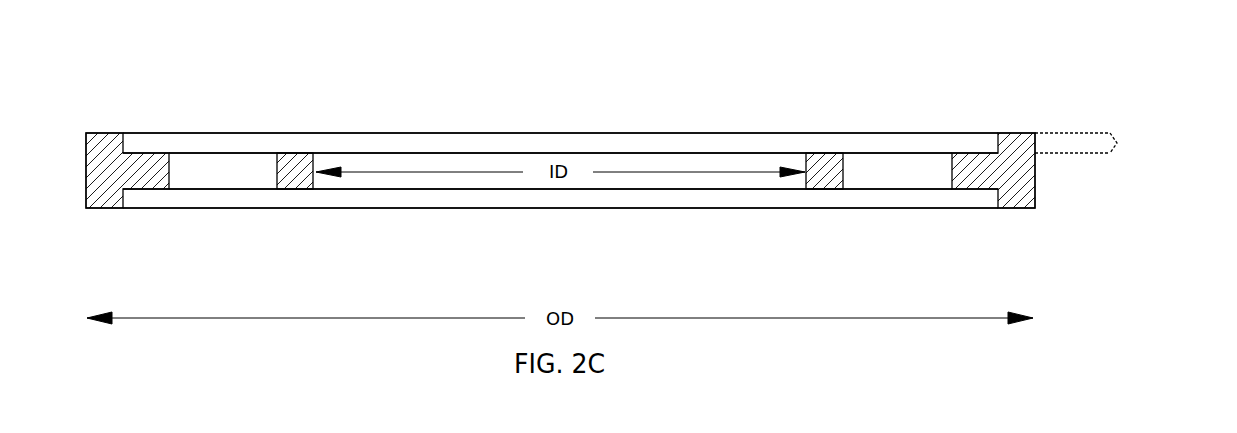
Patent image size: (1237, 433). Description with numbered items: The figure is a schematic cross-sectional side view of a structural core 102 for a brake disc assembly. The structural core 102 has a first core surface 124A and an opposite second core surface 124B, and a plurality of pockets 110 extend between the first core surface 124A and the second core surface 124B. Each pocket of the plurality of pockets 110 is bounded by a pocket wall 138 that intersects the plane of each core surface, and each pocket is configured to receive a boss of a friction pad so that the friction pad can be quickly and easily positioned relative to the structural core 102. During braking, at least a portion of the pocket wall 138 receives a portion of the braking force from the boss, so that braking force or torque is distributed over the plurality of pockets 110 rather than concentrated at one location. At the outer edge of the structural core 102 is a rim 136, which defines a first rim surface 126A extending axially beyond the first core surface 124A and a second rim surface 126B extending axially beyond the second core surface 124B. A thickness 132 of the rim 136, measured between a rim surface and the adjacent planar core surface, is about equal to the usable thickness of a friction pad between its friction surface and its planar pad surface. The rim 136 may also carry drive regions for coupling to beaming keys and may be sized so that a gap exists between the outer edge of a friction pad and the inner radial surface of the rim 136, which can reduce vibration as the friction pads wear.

The structural core 102 is at (604, 75).
The plurality of pockets 110 is at (925, 173).
The first core surface 124A is at (970, 146).
The second core surface 124B is at (966, 190).
The first rim surface 126A is at (960, 150).
The second rim surface 126B is at (918, 208).
The thickness of rim 132 is at (1117, 143).
The rim 136 is at (1013, 200).
The pocket wall 138 is at (952, 172).